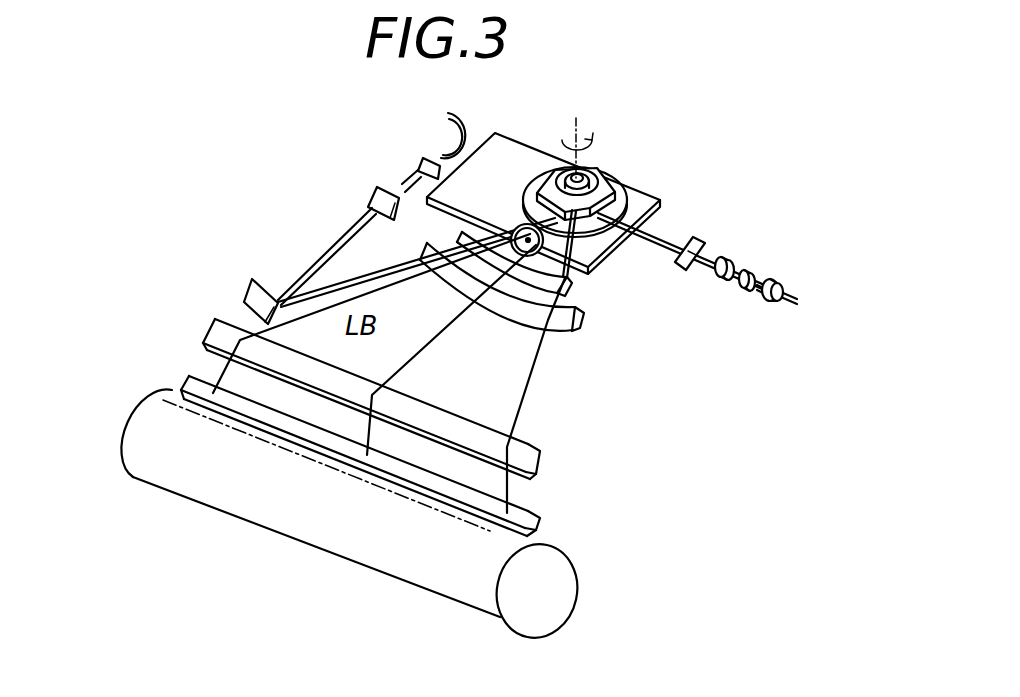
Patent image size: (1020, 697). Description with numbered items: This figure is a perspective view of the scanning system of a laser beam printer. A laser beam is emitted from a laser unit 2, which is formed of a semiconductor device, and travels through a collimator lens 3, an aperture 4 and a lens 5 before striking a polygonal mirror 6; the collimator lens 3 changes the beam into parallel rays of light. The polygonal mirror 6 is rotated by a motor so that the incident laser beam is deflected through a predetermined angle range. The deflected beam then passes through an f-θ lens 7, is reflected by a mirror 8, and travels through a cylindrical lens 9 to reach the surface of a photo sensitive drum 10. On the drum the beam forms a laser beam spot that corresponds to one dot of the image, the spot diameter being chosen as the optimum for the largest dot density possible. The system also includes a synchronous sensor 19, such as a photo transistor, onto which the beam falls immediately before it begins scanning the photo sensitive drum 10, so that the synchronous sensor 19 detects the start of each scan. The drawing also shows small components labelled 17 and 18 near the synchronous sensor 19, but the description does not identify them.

The laser unit 2 is at (783, 286).
The collimator lens 3 is at (750, 274).
The aperture 4 is at (726, 258).
The lens 5 is at (706, 236).
The polygonal mirror 6 is at (606, 180).
The f-θ lens 7 is at (586, 327).
The mirror 8 is at (212, 323).
The cylindrical lens 9 is at (186, 380).
The photo sensitive drum 10 is at (150, 417).
The beam detect mirror 17 is at (252, 283).
The beam detect sensor 18 is at (375, 186).
The synchronous sensor 19 is at (424, 157).